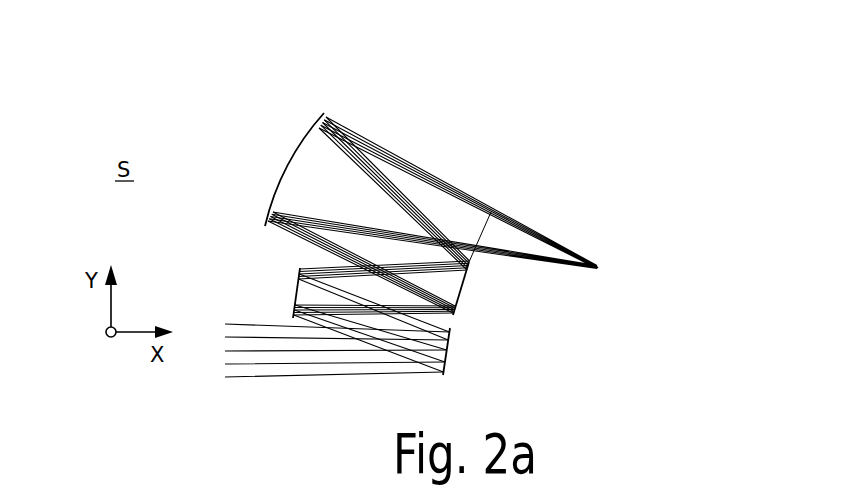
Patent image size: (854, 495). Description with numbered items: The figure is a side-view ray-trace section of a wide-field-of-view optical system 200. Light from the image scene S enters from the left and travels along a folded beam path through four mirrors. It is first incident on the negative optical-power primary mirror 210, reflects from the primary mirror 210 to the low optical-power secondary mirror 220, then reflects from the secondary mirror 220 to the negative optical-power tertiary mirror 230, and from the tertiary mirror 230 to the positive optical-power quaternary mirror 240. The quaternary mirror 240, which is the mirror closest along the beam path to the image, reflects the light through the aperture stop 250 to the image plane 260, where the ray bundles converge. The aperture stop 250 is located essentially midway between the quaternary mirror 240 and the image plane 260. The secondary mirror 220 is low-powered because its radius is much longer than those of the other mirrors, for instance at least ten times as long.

The WFOV optical system 200 is at (216, 72).
The primary mirror 210 is at (446, 372).
The secondary mirror 220 is at (296, 300).
The tertiary mirror 230 is at (460, 300).
The quaternary mirror 240 is at (282, 180).
The aperture stop 250 is at (488, 217).
The image plane 260 is at (622, 250).